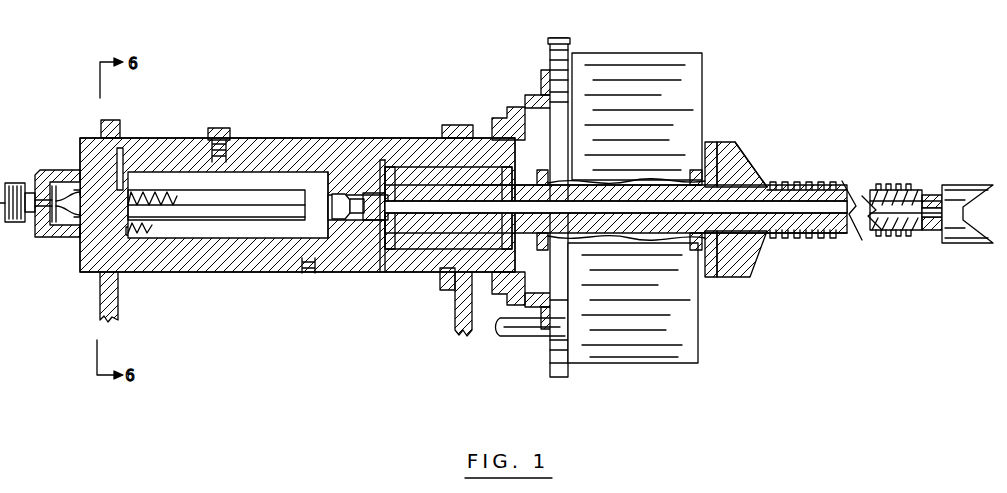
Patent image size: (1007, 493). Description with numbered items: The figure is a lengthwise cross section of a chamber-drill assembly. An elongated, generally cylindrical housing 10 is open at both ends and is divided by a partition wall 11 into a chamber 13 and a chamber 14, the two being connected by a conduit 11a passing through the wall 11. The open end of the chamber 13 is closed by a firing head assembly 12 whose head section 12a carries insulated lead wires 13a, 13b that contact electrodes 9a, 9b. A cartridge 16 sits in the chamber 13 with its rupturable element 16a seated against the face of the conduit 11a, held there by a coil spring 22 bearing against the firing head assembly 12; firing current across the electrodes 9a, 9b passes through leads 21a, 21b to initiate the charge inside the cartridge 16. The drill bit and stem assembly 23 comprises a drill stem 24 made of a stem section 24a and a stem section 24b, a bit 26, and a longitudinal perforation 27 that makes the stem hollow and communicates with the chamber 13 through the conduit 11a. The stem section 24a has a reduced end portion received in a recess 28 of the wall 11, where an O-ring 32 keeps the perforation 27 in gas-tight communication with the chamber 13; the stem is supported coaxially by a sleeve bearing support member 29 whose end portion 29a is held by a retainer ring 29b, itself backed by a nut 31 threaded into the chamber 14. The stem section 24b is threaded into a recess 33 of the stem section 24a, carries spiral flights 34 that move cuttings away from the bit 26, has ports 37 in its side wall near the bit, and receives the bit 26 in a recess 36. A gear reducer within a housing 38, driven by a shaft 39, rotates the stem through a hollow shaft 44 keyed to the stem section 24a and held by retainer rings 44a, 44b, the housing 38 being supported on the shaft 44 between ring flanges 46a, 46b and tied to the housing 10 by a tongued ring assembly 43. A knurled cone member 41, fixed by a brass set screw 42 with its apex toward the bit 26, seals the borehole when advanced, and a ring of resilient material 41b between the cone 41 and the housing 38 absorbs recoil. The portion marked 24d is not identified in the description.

The electrode 9a is at (136, 175).
The electrode 9b is at (134, 236).
The elongated housing 10 is at (278, 131).
The partition wall 11 is at (322, 158).
The conduit 11a is at (362, 185).
The firing head assembly 12 is at (73, 243).
The head section 12a is at (76, 246).
The chamber 13 is at (308, 182).
The lead wire 13a is at (65, 182).
The lead wire 13b is at (54, 236).
The chamber 14 is at (407, 170).
The cartridge 16 is at (250, 188).
The rupturable element 16a is at (342, 223).
The lead 21a is at (150, 186).
The lead 21b is at (148, 236).
The coil spring 22 is at (163, 207).
The drill bit and stem assembly 23 is at (922, 244).
The drill stem 24 is at (812, 180).
The stem section 24a is at (465, 195).
The stem section 24b is at (833, 188).
The shaft coupling end 24d is at (372, 193).
The bit 26 is at (976, 186).
The perforation 27 is at (757, 207).
The recess 28 is at (370, 198).
The sleeve bearing support member 29 is at (433, 178).
The end portion 29a is at (391, 170).
The retainer ring 29b is at (496, 172).
The nut 31 is at (512, 138).
The O-ring 32 is at (377, 243).
The recess 33 is at (766, 230).
The flights 34 is at (886, 190).
The recess 36 is at (932, 196).
The ports 37 is at (935, 231).
The housing 38 is at (703, 55).
The shaft 39 is at (517, 328).
The cone member 41 is at (737, 142).
The ring of resilient material 41b is at (718, 143).
The brass set screw 42 is at (751, 166).
The tongued ring assembly 43 is at (544, 74).
The hollow shaft 44 is at (689, 258).
The retainer ring 44a is at (739, 266).
The retainer ring 44b is at (473, 302).
The ring flange 46a is at (695, 252).
The ring flange 46b is at (546, 252).